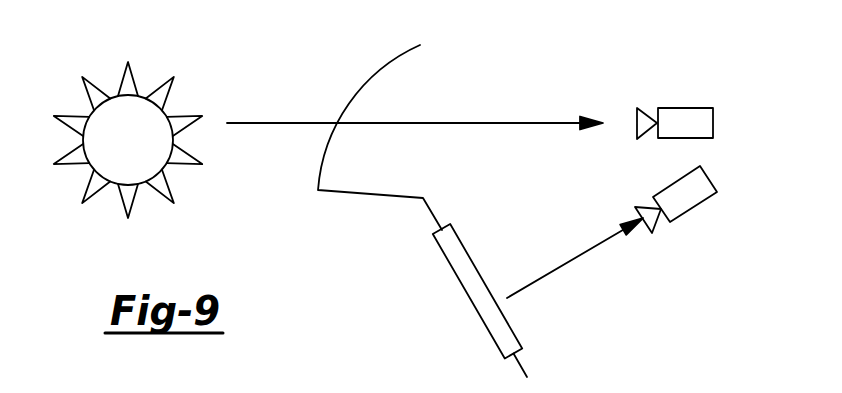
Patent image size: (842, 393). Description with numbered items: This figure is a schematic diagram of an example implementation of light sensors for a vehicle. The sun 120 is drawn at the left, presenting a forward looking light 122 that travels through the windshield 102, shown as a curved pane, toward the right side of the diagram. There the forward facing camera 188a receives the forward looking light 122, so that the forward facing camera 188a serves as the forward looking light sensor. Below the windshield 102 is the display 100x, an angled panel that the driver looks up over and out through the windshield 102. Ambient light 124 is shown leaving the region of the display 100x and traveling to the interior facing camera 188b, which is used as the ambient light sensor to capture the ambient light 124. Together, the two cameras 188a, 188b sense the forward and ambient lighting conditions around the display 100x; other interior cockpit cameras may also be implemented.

The sun 120 is at (117, 93).
The windshield 102 is at (398, 58).
The display 100x is at (468, 295).
The forward looking light 122 is at (493, 122).
The ambient light 124 is at (577, 257).
The forward facing camera 188a is at (685, 108).
The interior facing camera 188b is at (692, 208).